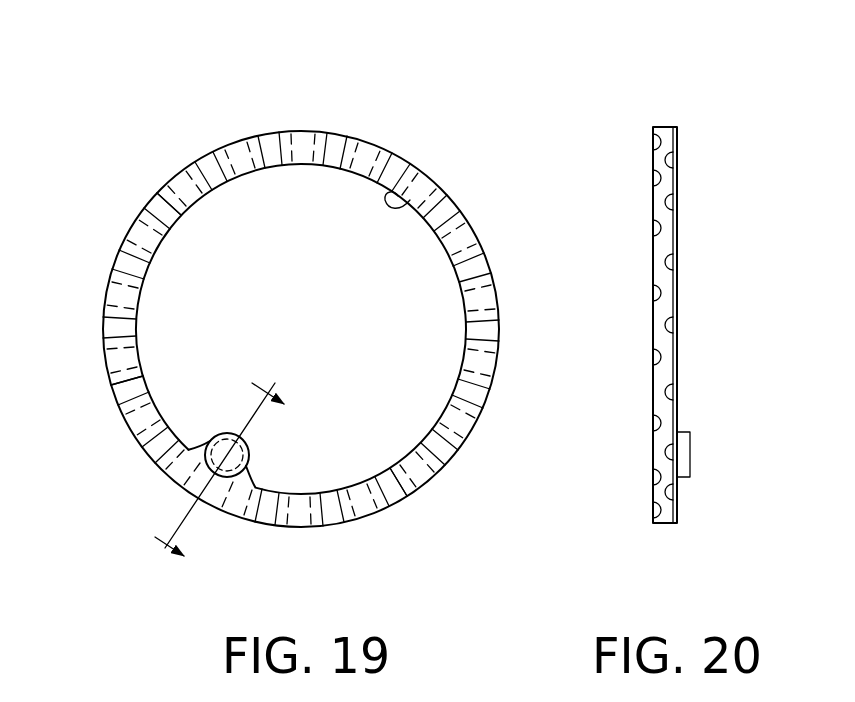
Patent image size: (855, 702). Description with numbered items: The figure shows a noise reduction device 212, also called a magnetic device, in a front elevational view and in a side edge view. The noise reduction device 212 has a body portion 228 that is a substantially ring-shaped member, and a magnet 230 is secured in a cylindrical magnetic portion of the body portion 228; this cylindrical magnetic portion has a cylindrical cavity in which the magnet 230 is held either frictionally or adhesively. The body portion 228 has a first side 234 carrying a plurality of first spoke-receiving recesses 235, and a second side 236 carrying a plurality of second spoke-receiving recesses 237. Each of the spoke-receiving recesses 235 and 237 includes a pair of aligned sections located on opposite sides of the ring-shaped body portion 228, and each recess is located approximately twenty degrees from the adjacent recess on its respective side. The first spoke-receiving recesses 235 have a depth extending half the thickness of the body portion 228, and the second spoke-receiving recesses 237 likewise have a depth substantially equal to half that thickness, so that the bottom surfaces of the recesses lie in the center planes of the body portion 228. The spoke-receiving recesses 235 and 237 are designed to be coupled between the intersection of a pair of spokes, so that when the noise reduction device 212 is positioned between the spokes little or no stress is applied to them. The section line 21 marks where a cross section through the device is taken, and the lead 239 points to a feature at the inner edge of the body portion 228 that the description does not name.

In FIG. 19, the noise reduction device 212 is at (398, 125).
In FIG. 20, the noise reduction device 212 is at (702, 126).
In FIG. 19, the first spoke-receiving recesses 235 is at (327, 137).
In FIG. 20, the first spoke-receiving recesses 235 is at (678, 200).
In FIG. 19, the body portion 228 is at (168, 190).
In FIG. 20, the body portion 228 is at (678, 222).
In FIG. 19, the second spoke-receiving recesses 237 is at (98, 360).
In FIG. 20, the second spoke-receiving recesses 237 is at (652, 225).
In FIG. 19, the hook 239 is at (410, 200).
In FIG. 19, the magnet 230 is at (250, 457).
In FIG. 19, the first side 234 is at (413, 490).
In FIG. 20, the first side 234 is at (678, 360).
In FIG. 20, the second side 236 is at (653, 400).
In FIG. 19, the section line 21- 21 is at (249, 487).